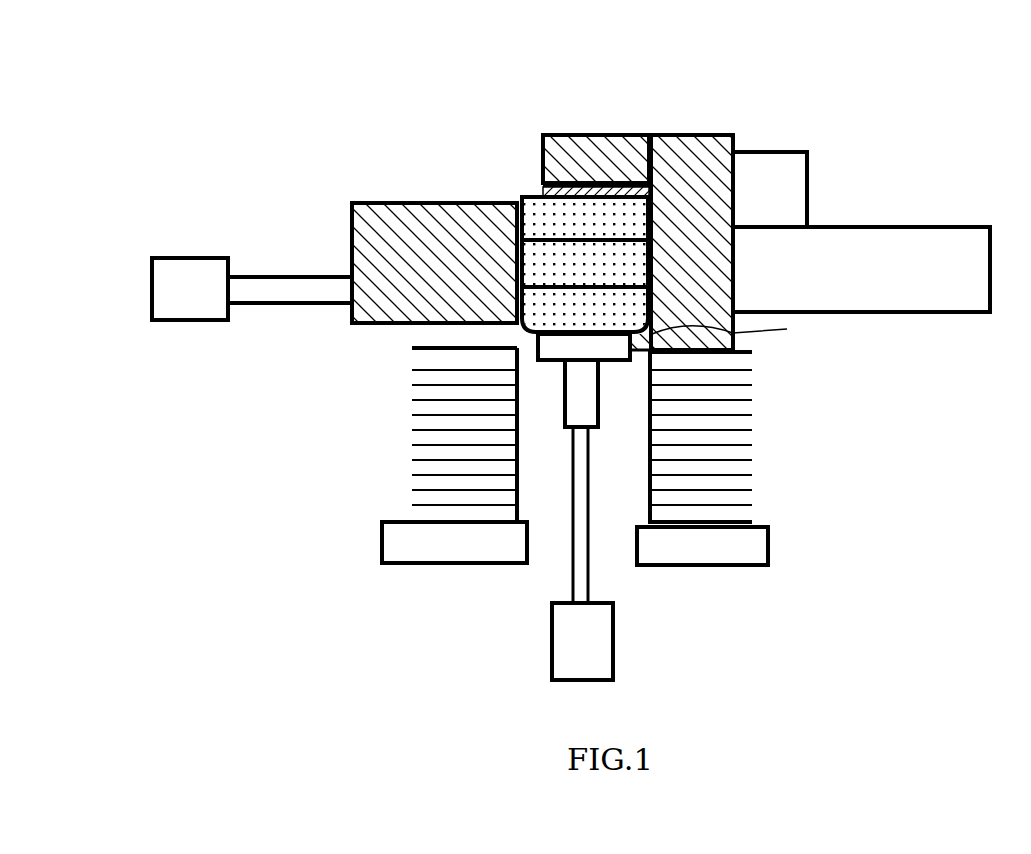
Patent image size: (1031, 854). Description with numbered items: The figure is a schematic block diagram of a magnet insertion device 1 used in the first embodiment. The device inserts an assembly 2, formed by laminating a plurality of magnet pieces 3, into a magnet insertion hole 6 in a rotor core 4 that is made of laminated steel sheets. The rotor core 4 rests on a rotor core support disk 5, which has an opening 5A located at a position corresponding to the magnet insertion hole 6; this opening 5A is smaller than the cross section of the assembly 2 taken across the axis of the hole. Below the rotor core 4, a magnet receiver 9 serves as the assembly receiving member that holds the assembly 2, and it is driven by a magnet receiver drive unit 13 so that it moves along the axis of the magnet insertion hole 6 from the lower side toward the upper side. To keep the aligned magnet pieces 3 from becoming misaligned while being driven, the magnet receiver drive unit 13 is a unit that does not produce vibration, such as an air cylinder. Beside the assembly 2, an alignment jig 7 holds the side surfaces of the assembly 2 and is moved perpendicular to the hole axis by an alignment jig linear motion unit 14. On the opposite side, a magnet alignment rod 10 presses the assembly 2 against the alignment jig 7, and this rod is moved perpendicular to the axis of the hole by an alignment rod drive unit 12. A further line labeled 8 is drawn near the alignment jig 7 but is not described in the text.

The magnet insertion device 1 is at (384, 106).
The assembly 2 is at (516, 180).
The magnet pieces 3 is at (594, 214).
The rotor core 4 is at (735, 420).
The rotor core support disk 5 is at (692, 548).
The opening 5A is at (548, 550).
The magnet insertion hole 6 is at (607, 497).
The alignment jig 7 is at (706, 152).
The gap 8 is at (727, 329).
The magnet receiver 9 is at (578, 388).
The magnet alignment rod 10 is at (385, 305).
The alignment rod drive unit 12 is at (185, 273).
The magnet receiver drive unit 13 is at (592, 652).
The alignment jig linear motion unit 14 is at (783, 193).